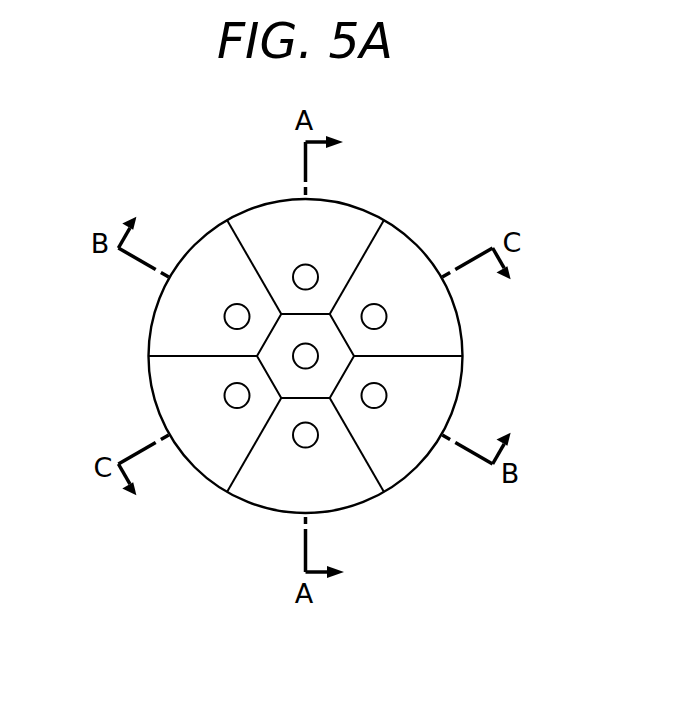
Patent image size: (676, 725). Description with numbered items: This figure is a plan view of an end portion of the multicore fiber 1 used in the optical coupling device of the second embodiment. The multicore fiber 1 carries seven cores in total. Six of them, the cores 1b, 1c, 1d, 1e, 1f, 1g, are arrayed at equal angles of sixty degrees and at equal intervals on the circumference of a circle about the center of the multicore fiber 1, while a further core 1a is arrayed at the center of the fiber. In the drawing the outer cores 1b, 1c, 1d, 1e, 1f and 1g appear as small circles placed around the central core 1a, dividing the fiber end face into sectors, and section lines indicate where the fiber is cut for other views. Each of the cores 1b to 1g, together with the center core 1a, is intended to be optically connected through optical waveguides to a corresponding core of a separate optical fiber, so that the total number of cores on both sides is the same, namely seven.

The multicore fiber 1 is at (219, 182).
The core 1a is at (317, 267).
The core 1b is at (317, 347).
The core 1c is at (310, 448).
The core 1d is at (231, 304).
The core 1e is at (224, 391).
The core 1f is at (387, 323).
The core 1g is at (386, 397).